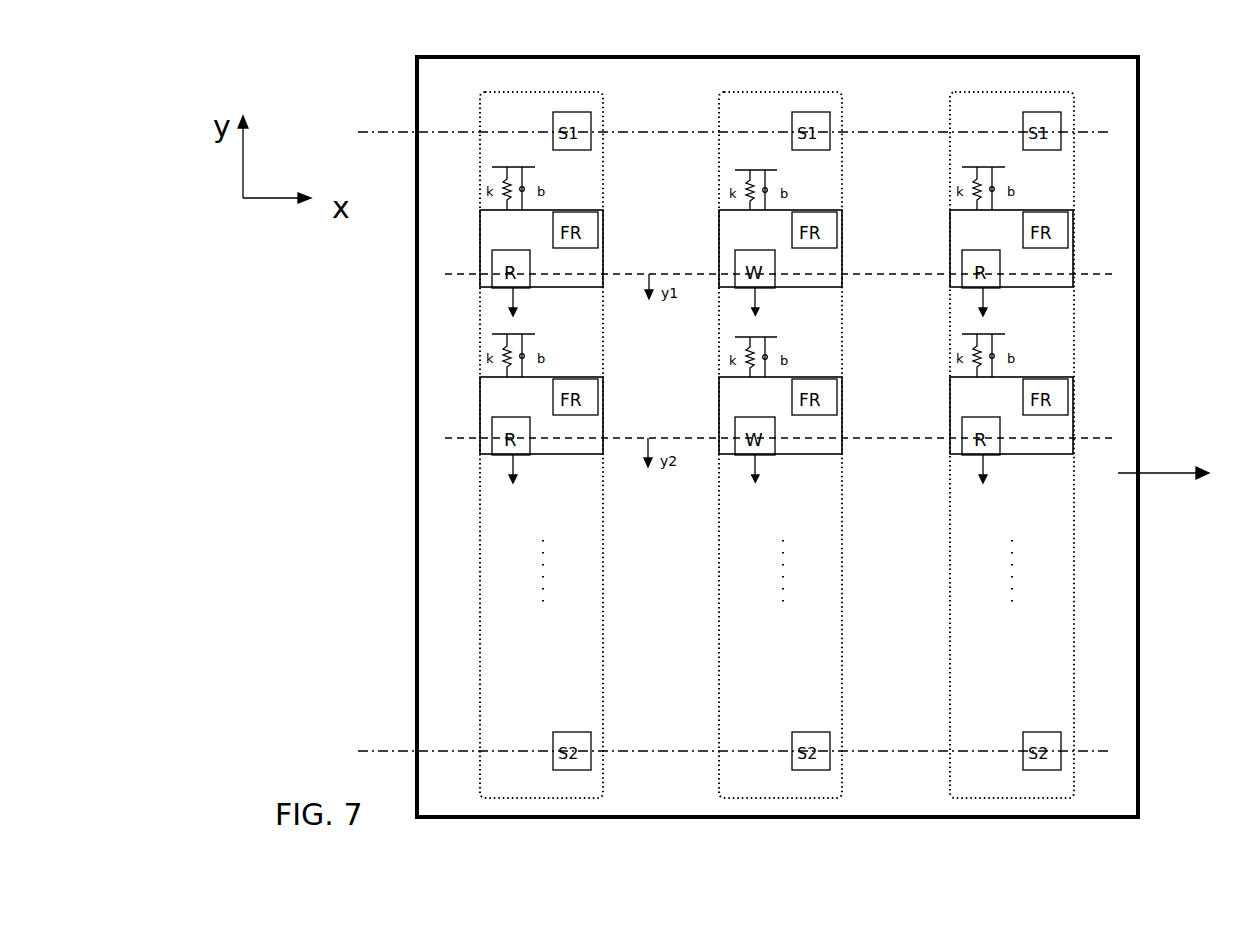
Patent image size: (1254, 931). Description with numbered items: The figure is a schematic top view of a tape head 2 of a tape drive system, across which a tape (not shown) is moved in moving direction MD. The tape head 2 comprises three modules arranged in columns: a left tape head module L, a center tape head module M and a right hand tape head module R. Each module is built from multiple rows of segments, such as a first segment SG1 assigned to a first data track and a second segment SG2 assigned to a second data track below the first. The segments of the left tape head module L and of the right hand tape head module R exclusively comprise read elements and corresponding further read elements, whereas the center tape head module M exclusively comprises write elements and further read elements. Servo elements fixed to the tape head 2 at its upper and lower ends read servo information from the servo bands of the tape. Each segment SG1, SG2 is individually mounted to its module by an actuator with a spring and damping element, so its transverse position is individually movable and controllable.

The tape head 2 is at (1138, 616).
The left tape head module L is at (478, 657).
The center tape head module M is at (718, 630).
The right hand tape head module R is at (1075, 306).
The first segment SG1 is at (719, 250).
The second segment SG2 is at (719, 408).
The moving direction MD is at (1163, 452).